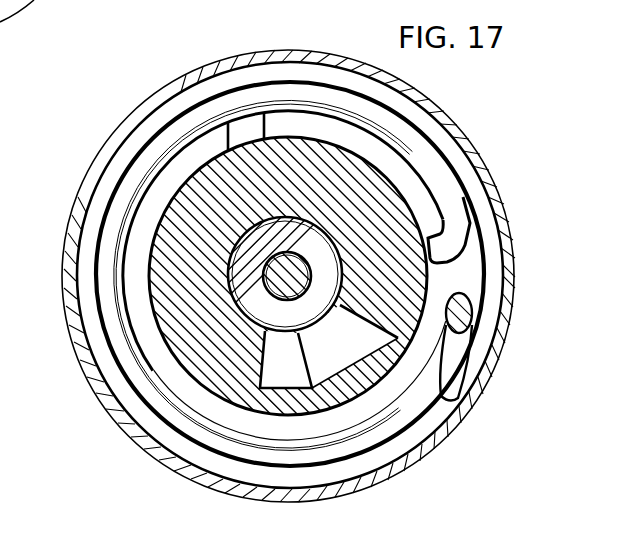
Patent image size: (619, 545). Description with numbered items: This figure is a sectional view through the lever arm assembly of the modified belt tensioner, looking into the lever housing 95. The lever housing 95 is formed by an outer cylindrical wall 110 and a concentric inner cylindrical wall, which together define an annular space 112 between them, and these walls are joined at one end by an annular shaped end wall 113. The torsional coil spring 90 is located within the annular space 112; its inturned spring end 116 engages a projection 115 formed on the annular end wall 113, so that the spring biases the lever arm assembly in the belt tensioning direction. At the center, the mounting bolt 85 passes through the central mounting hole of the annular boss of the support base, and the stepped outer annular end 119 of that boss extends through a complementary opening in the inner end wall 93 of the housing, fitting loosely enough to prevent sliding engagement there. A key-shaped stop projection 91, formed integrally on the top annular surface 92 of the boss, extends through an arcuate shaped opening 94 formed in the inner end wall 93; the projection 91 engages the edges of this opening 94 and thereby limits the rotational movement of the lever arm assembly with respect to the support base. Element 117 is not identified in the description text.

The mounting bolt 85 is at (290, 275).
The torsional coil spring 90 is at (412, 94).
The stop projection 91 is at (271, 383).
The top annular surface 92 is at (338, 367).
The inner end wall 93 is at (190, 203).
The arcuate shaped opening 94 is at (354, 356).
The lever housing 95 is at (208, 491).
The outer cylindrical wall 110 is at (118, 380).
The annular space 112 is at (180, 418).
The annular shaped end wall 113 is at (300, 92).
The projection 115 is at (416, 188).
The inturned spring end 116 is at (438, 248).
The rotor sleeve 117 is at (157, 325).
The stepped outer annular end 119 is at (322, 288).